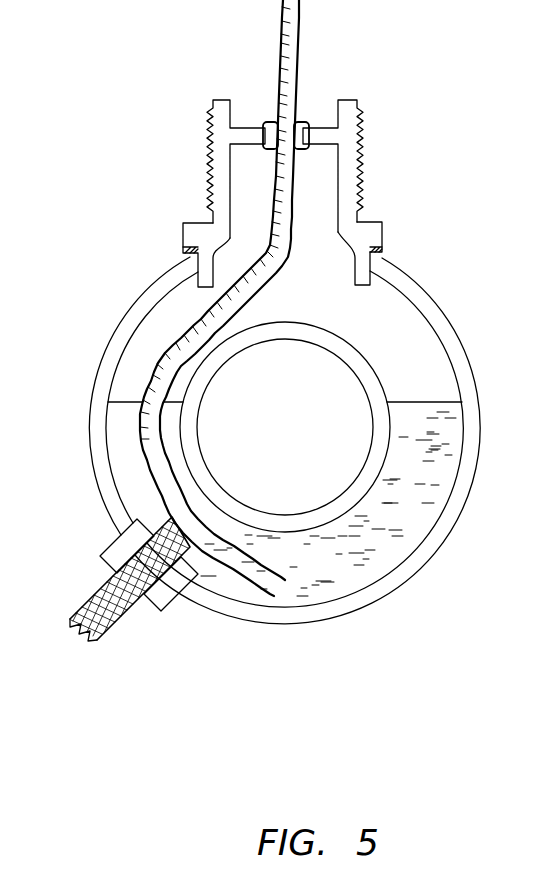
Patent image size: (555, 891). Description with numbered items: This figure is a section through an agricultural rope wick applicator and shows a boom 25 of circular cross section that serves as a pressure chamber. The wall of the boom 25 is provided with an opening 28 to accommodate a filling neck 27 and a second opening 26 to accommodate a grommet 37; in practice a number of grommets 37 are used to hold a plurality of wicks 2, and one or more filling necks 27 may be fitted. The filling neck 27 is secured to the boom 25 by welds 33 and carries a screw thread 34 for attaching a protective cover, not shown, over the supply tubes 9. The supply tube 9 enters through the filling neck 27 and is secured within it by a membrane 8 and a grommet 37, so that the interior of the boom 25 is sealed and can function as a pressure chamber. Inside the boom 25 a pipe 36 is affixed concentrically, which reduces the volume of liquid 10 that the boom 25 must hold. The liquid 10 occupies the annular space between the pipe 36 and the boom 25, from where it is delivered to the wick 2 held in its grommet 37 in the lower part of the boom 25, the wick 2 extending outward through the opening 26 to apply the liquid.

The wick 2 is at (118, 623).
The membrane 8 is at (250, 128).
The supply tube 9 is at (270, 284).
The liquid 10 is at (436, 509).
The boom 25 is at (482, 412).
The opening 26 is at (116, 550).
The filling neck 27 is at (383, 232).
The opening 28 is at (372, 282).
The weld 33 is at (187, 251).
The screw thread 34 is at (363, 172).
The pipe 36 is at (385, 388).
The grommet 37 is at (301, 122).